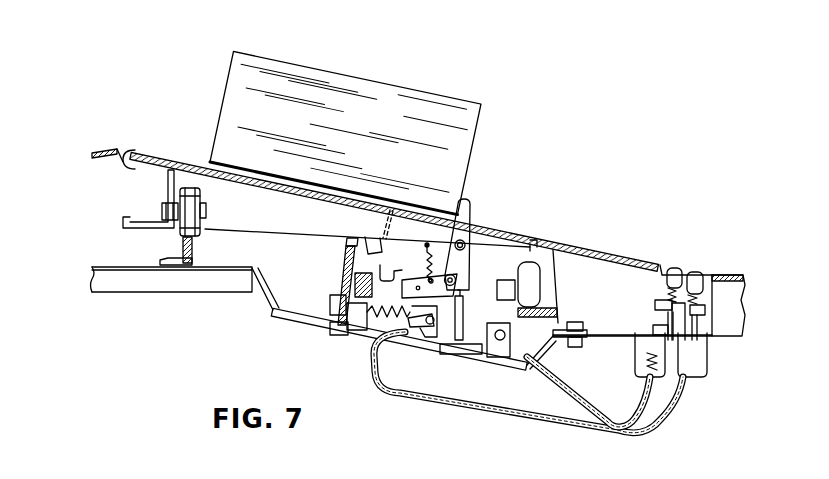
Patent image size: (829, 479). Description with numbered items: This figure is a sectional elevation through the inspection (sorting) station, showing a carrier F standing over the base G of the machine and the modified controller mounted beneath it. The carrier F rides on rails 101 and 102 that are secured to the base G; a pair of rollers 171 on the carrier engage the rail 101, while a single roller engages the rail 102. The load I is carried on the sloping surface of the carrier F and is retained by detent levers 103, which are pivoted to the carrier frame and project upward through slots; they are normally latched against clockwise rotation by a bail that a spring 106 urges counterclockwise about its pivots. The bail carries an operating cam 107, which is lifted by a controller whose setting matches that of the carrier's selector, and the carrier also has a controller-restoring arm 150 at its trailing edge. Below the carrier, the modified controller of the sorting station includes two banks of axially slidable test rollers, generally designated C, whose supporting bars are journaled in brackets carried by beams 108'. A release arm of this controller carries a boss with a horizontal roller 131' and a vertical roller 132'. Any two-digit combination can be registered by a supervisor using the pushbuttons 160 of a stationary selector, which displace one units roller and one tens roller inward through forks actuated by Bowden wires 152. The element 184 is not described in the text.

The camming slide I is at (364, 143).
The carrier F is at (282, 218).
The base G is at (210, 283).
The rollers C is at (470, 354).
The pair of rollers 171 is at (201, 193).
The rail 101 is at (193, 250).
The beams 108' is at (254, 295).
The controller-restoring arm 150 is at (368, 248).
The vertical roller 132' is at (332, 249).
The horizontal roller 131' is at (332, 290).
The operating cam 107 is at (382, 270).
The spring 106 is at (425, 250).
The detent levers 103 is at (469, 209).
The rail 102 is at (547, 309).
The bolt assembly 184 is at (668, 291).
The pushbuttons 160 is at (697, 273).
The Bowden wires 152 is at (623, 434).